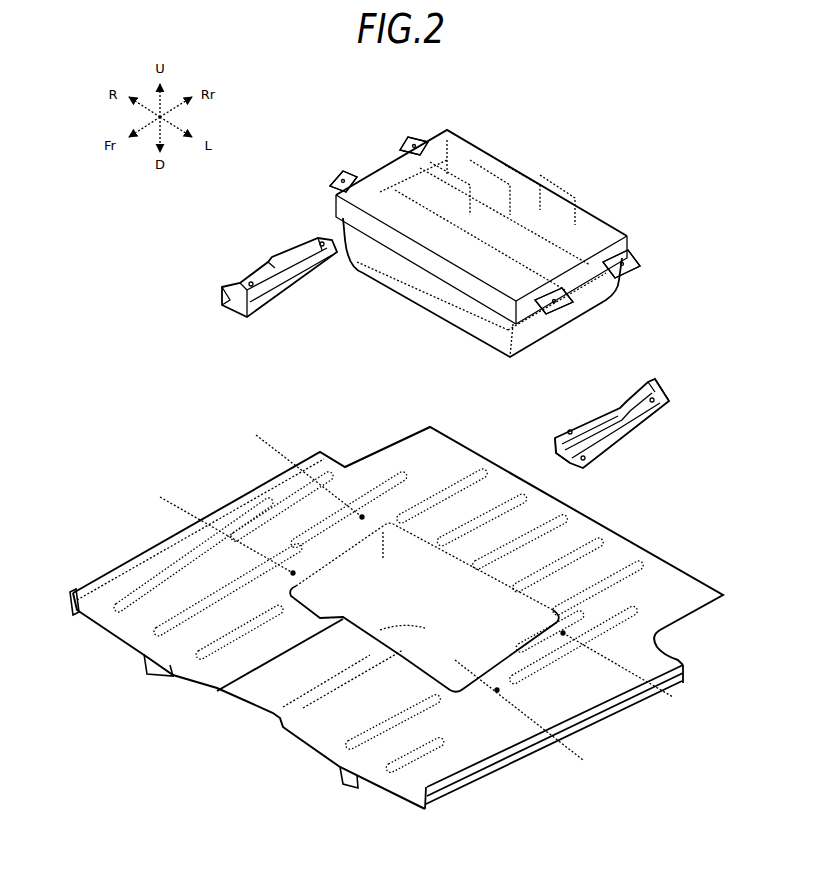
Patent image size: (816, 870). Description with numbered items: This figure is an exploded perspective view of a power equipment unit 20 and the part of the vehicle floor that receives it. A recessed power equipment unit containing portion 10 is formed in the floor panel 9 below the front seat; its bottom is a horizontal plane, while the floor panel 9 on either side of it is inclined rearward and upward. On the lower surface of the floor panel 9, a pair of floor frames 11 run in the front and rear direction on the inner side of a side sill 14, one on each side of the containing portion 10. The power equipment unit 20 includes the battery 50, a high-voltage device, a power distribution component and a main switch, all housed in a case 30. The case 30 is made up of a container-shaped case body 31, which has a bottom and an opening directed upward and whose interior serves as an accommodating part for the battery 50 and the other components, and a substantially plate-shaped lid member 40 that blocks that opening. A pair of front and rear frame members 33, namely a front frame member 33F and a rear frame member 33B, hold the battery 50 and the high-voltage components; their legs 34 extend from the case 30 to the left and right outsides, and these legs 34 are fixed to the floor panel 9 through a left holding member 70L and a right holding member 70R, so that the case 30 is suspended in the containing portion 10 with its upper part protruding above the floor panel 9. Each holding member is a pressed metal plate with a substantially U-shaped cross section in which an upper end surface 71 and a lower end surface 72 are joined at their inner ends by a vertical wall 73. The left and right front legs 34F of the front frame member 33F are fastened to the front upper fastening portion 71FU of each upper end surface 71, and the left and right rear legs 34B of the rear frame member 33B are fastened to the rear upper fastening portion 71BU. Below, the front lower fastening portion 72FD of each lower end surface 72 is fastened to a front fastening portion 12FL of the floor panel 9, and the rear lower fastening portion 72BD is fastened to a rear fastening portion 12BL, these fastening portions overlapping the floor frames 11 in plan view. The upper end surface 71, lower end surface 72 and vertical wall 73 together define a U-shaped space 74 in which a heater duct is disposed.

The floor panel 9 is at (232, 655).
The power equipment unit containing portion 10 is at (272, 728).
The floor frames 11 is at (150, 676).
The front fastening portion 12FL is at (369, 629).
The rear fastening portion 12BL is at (466, 565).
The side sill 14 is at (74, 590).
The power equipment unit 20 is at (566, 136).
The case 30 is at (574, 202).
The case body 31 is at (452, 304).
The frame members 33 is at (430, 85).
The front frame member 33F is at (445, 163).
The rear frame member 33B is at (490, 162).
The legs 34 is at (287, 140).
The front legs 34F is at (336, 178).
The rear legs 34B is at (407, 140).
The lid member 40 is at (532, 182).
The battery 50 is at (500, 172).
The right holding member 70R is at (297, 294).
The left holding member 70L is at (635, 436).
The upper end surface 71 is at (300, 272).
The front upper fastening portion 71FU is at (256, 278).
The rear upper fastening portion 71BU is at (322, 240).
The lower end surface 72 is at (238, 320).
The front lower fastening portion 72FD is at (226, 297).
The rear lower fastening portion 72BD is at (669, 403).
The vertical wall 73 is at (272, 306).
The U-shaped space 74 is at (230, 290).